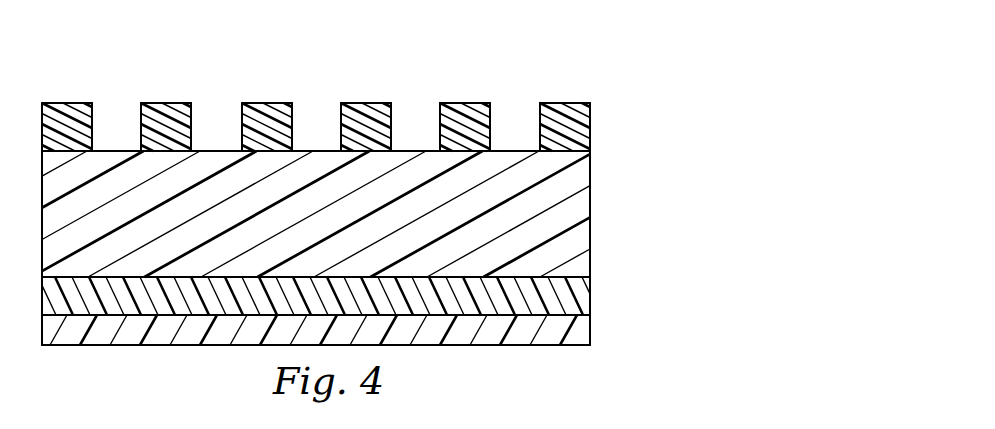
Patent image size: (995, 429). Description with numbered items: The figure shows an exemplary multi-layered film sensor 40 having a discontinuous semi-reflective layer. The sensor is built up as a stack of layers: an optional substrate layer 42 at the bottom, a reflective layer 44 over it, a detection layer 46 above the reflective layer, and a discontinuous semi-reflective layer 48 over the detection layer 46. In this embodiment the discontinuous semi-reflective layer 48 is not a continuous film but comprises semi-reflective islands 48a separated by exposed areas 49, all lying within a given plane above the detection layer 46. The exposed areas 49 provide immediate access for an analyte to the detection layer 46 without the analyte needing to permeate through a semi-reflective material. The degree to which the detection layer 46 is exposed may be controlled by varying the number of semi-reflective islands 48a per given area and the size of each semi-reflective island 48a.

The multi-layered film sensor 40 is at (527, 74).
The substrate layer 42 is at (590, 337).
The reflective layer 44 is at (590, 299).
The detection layer 46 is at (590, 216).
The discontinuous semi-reflective layer 48 is at (590, 141).
The semi-reflective islands 48a is at (63, 103).
The exposed areas 49 is at (222, 103).